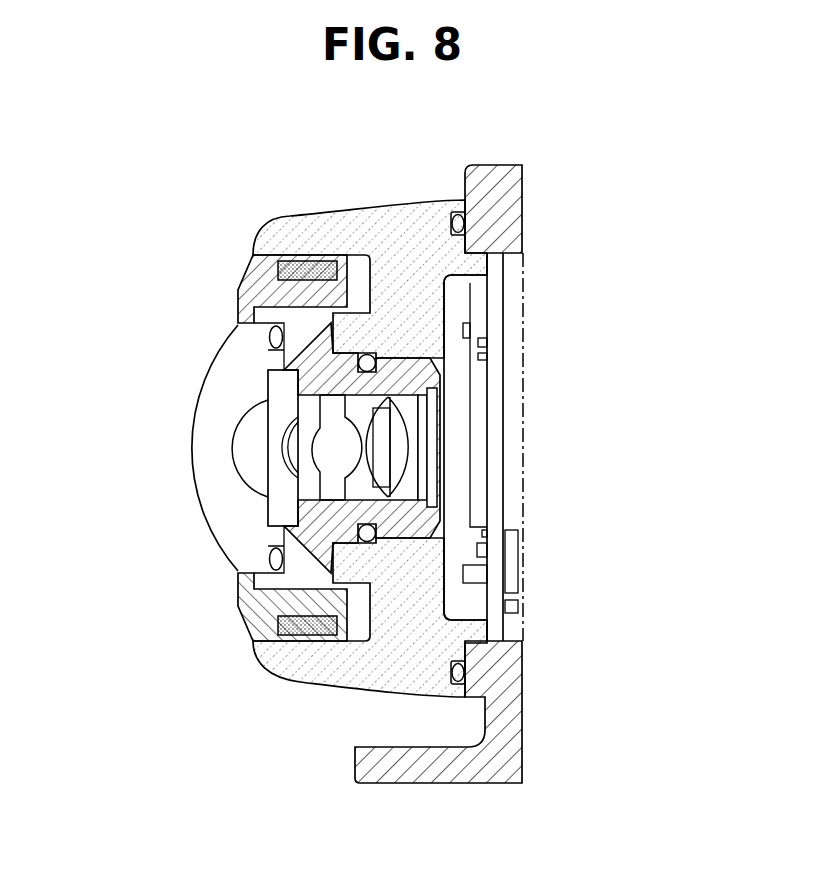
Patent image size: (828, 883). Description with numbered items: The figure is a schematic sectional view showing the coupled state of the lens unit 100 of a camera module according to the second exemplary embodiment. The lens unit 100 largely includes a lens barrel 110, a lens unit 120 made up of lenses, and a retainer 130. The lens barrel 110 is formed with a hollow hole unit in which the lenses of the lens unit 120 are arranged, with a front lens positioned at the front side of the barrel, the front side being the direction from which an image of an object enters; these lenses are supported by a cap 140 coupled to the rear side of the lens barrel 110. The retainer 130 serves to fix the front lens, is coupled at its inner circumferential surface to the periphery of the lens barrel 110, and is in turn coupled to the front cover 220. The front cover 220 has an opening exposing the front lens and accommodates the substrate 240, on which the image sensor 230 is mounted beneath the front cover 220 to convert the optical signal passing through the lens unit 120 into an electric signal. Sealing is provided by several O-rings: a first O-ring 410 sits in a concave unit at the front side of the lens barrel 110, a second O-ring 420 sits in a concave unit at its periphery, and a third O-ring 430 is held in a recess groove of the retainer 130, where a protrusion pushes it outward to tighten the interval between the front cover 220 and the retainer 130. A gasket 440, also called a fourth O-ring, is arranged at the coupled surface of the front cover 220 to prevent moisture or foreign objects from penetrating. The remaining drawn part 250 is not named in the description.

The lens unit 100 is at (244, 625).
The lens barrel 110 is at (307, 322).
The lens unit 120 is at (189, 433).
The retainer 130 is at (258, 273).
The cap 140 is at (436, 449).
The front cover 220 is at (310, 684).
The image sensor 230 is at (480, 405).
The substrate 240 is at (497, 290).
The bracket 250 is at (513, 752).
The first O-ring 410 is at (270, 337).
The second O-ring 420 is at (366, 354).
The third O-ring 430 is at (293, 258).
The gasket 440 is at (458, 213).